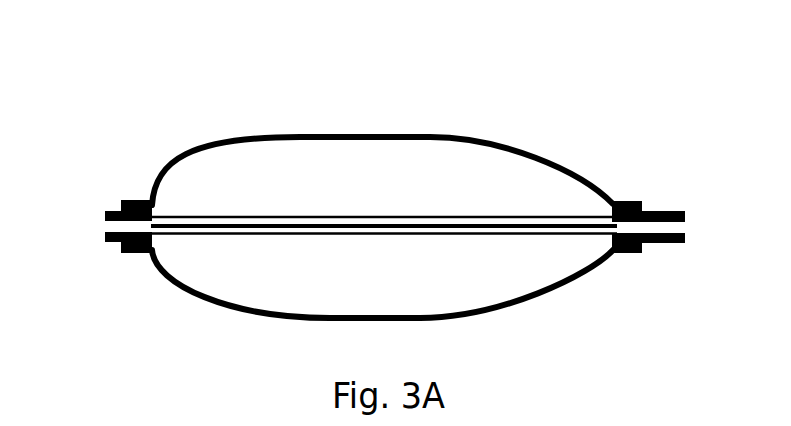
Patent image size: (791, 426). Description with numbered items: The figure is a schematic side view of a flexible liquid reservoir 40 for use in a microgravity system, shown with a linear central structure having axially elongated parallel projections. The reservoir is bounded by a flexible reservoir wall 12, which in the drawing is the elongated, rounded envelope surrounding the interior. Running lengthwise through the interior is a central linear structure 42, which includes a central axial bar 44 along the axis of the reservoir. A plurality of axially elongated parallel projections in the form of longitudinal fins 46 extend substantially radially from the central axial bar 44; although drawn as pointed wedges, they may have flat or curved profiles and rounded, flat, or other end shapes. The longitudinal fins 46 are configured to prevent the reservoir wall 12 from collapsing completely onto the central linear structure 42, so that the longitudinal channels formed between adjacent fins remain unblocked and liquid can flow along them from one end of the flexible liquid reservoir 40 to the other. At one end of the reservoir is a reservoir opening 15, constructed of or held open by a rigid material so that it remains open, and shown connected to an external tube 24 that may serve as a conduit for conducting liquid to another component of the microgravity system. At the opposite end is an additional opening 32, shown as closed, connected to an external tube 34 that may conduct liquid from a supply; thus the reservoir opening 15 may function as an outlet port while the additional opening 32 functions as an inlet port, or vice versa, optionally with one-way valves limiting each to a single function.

The flexible liquid reservoir 40 is at (163, 83).
The reservoir wall 12 is at (497, 308).
The central linear structure 42 is at (361, 177).
The central axial bar 44 is at (343, 222).
The longitudinal fins 46 is at (494, 219).
The additional opening 32 is at (140, 200).
The external tube 34 is at (112, 241).
The reservoir opening 15 is at (640, 202).
The external tube 24 is at (680, 245).